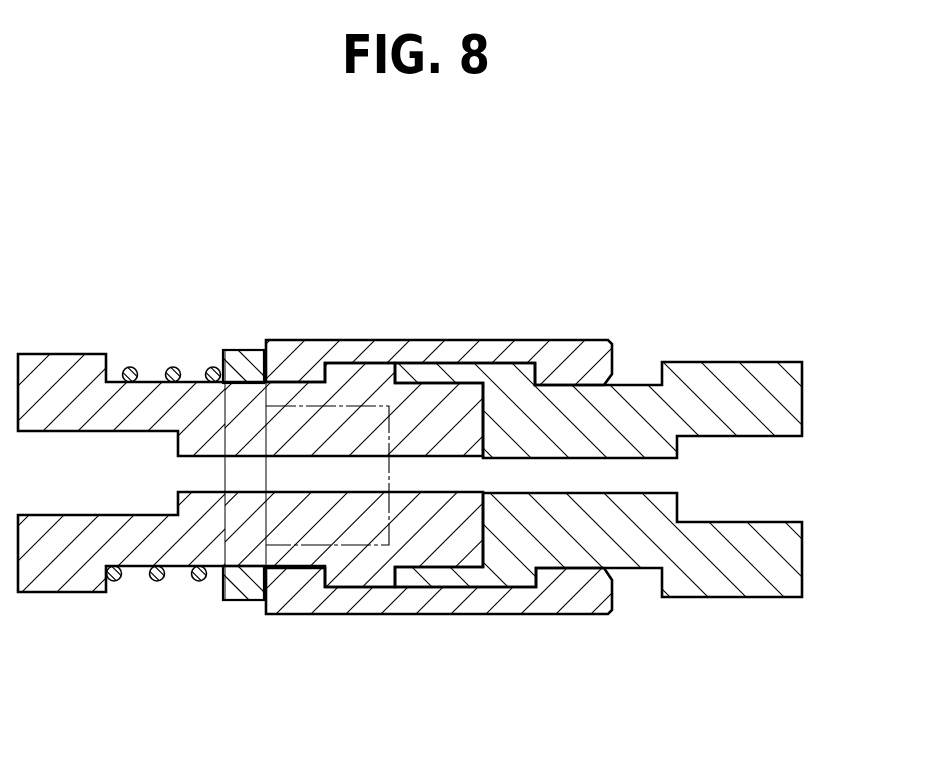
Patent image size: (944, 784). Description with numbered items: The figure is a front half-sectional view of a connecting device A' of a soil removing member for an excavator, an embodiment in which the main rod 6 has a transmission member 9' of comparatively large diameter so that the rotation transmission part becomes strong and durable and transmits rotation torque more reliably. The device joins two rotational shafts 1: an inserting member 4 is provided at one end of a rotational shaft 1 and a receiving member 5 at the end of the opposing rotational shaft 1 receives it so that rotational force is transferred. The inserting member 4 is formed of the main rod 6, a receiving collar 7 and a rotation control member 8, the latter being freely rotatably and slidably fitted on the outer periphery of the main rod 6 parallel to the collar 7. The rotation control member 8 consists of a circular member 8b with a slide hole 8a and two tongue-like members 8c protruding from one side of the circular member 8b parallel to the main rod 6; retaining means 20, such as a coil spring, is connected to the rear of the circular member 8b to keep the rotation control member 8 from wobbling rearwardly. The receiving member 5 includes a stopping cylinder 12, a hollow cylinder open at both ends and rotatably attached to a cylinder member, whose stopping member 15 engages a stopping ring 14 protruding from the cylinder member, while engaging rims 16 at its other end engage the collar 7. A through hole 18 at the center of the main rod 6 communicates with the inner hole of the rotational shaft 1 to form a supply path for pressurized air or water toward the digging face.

The rotational shaft 1 is at (45, 362).
The inserting member 4 is at (197, 318).
The receiving member 5 is at (665, 328).
The main rod 6 is at (150, 544).
The receiving collar 7 is at (359, 376).
The rotation control member 8 is at (222, 598).
The slide hole 8a is at (249, 372).
The circular member 8b is at (245, 588).
The tongue-like members 8c is at (340, 535).
The transmission member 9' is at (390, 415).
The stopping cylinder 12 is at (470, 352).
The stopping ring 14 is at (534, 376).
The stopping member 15 is at (565, 352).
The engaging rims 16 is at (299, 372).
The through hole 18 is at (88, 462).
The retaining means 20 is at (170, 366).
The connecting device A' is at (418, 367).